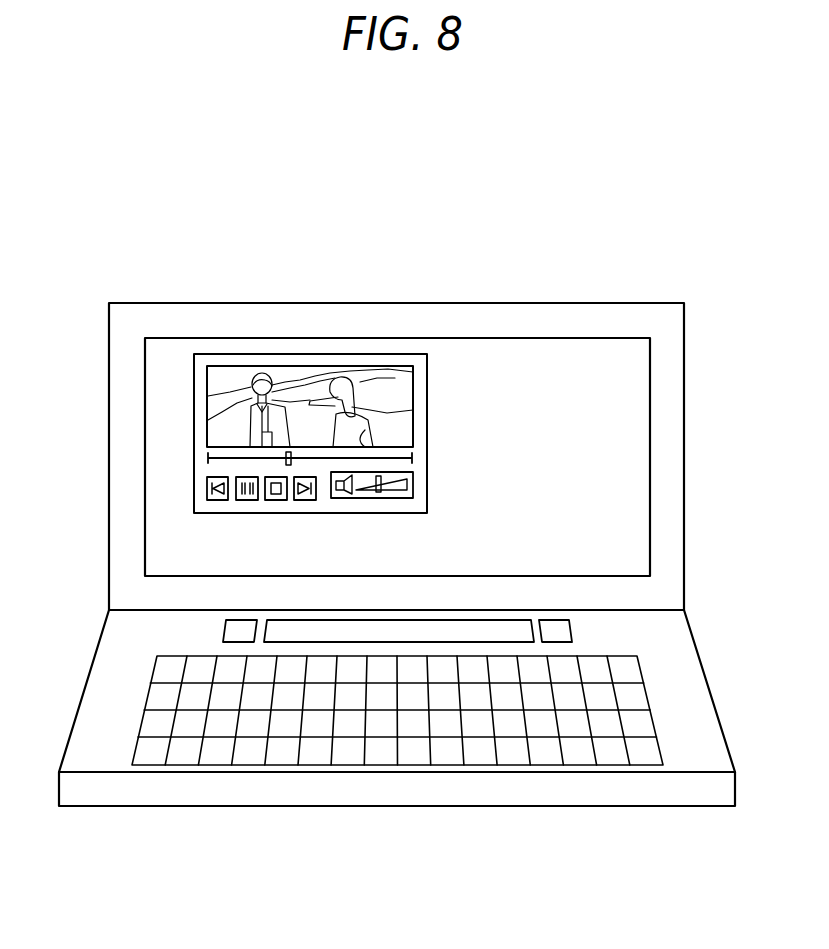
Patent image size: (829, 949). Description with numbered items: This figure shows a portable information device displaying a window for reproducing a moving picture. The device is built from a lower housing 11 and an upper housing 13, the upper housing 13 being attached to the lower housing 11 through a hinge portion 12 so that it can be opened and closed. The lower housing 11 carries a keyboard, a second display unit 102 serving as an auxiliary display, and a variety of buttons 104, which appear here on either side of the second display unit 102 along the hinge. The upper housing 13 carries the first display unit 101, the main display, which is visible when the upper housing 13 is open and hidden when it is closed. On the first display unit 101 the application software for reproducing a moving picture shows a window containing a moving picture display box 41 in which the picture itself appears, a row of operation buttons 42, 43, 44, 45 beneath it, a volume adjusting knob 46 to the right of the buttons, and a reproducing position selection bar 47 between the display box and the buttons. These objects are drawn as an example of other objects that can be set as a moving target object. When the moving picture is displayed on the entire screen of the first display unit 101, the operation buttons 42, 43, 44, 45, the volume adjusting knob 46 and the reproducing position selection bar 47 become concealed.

The lower housing 11 is at (707, 717).
The hinge portion 12 is at (684, 610).
The upper housing 13 is at (684, 435).
The moving picture display box 41 is at (413, 405).
The operation button 42 is at (218, 501).
The operation button 43 is at (247, 501).
The operation button 44 is at (276, 501).
The operation button 45 is at (305, 501).
The volume adjusting knob 46 is at (413, 487).
The reproducing position selection bar 47 is at (413, 458).
The first display unit 101 is at (650, 377).
The second display unit 102 is at (503, 620).
The buttons 104 is at (225, 630).